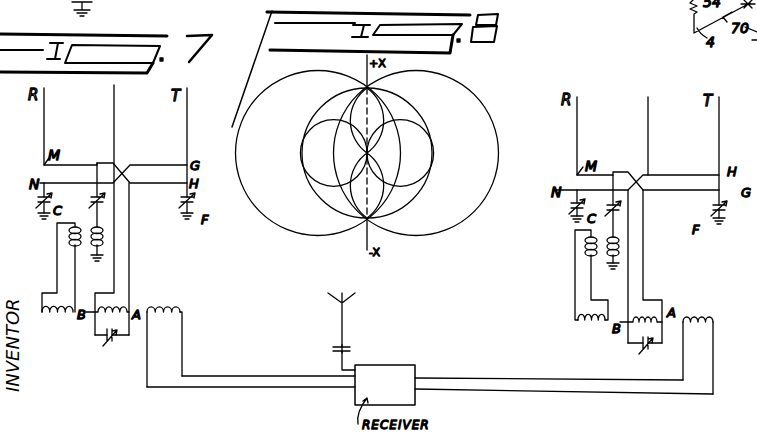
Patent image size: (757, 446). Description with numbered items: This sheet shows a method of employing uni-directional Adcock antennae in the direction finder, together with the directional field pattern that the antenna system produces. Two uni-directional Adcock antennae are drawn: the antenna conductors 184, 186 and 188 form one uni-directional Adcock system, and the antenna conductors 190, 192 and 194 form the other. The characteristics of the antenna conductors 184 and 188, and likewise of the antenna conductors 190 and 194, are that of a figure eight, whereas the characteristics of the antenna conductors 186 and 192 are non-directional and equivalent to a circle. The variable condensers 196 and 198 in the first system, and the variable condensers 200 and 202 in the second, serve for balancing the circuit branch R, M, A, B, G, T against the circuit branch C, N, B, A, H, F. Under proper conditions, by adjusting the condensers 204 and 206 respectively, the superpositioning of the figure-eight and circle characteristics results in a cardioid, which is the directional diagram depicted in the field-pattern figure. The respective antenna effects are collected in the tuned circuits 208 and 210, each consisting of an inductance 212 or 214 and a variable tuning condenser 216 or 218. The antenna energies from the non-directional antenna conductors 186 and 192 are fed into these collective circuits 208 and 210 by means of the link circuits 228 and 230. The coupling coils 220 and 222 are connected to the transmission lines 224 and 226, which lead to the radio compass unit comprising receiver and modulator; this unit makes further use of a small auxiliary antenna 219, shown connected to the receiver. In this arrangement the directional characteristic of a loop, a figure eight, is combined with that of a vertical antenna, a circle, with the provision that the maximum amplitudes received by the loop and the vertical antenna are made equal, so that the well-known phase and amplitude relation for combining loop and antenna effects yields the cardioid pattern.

The antenna conductor 184 is at (44, 95).
The antenna conductor 186 is at (114, 93).
The antenna conductor 188 is at (187, 96).
The antenna conductor 190 is at (578, 107).
The antenna conductor 192 is at (649, 108).
The antenna conductor 194 is at (720, 108).
The variable condenser 196 is at (50, 198).
The variable condenser 198 is at (193, 201).
The variable condenser 200 is at (570, 210).
The variable condenser 202 is at (725, 210).
The condenser 204 is at (103, 200).
The condenser 206 is at (619, 208).
The tuned circuit 208 is at (100, 338).
The tuned circuit 210 is at (636, 345).
The inductance 212 is at (112, 308).
The inductance 214 is at (645, 318).
The variable tuning condenser 216 is at (113, 341).
The variable tuning condenser 218 is at (650, 349).
The auxiliary antenna 219 is at (342, 323).
The coupling coil 220 is at (178, 306).
The coupling coil 222 is at (703, 315).
The transmission line 224 is at (280, 387).
The transmission line 226 is at (463, 388).
The link circuit 228 is at (72, 278).
The link circuit 230 is at (580, 283).